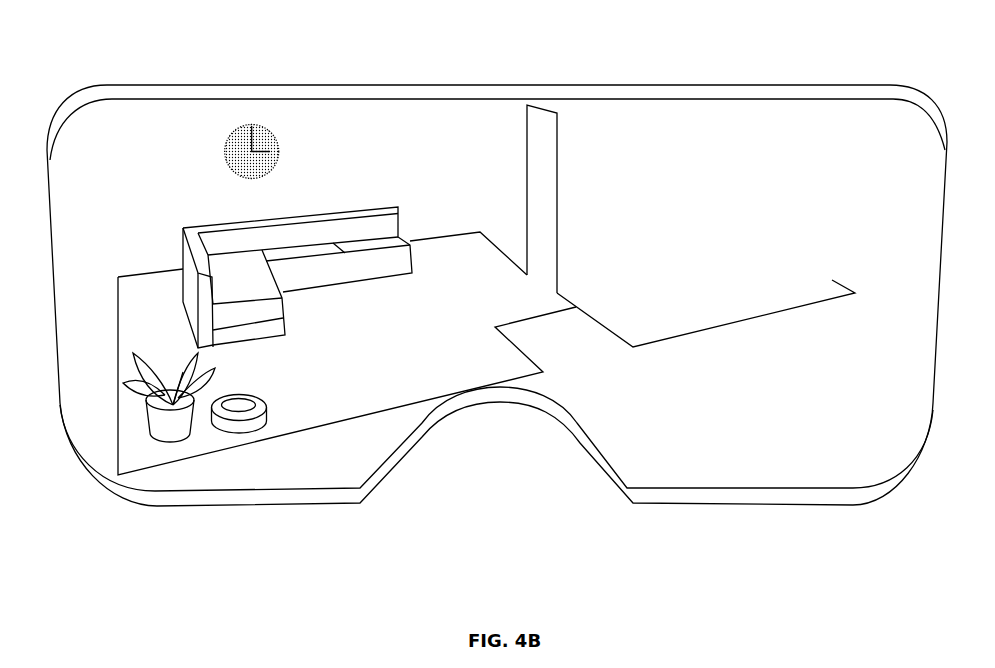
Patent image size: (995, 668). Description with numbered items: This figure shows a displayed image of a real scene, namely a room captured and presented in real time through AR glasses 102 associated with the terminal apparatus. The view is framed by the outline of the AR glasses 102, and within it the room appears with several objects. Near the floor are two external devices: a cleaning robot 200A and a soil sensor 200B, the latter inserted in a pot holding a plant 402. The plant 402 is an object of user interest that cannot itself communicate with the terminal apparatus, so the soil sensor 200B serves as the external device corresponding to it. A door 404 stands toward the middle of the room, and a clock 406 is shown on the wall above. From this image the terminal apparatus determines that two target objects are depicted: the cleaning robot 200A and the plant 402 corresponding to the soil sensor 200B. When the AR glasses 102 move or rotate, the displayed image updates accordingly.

The AR glasses 102 is at (917, 110).
The external device (cleaning robot) 200A is at (267, 422).
The external device (soil sensor) 200B is at (173, 413).
The plant 402 is at (142, 392).
The door 404 is at (557, 183).
The clock 406 is at (275, 143).